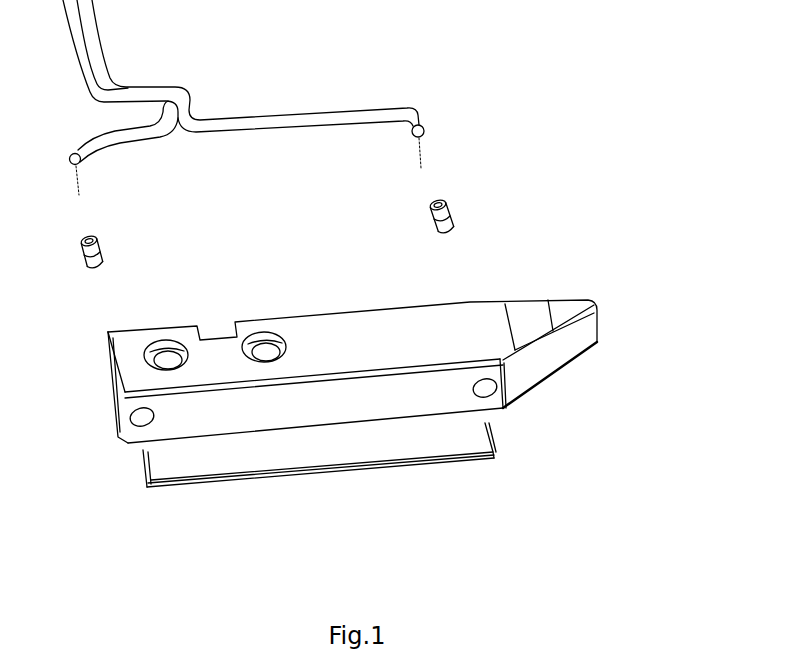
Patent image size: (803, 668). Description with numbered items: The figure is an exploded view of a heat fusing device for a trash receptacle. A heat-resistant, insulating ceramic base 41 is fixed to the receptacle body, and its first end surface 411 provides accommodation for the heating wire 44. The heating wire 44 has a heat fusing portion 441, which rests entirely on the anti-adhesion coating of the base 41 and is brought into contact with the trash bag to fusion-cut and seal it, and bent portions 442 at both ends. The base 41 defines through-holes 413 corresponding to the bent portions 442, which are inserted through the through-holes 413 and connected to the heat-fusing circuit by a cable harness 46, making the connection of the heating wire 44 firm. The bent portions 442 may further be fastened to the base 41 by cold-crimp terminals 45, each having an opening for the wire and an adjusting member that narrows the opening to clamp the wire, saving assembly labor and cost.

The base 41 is at (586, 295).
The first end surface 411 is at (185, 410).
The through-holes 413 is at (138, 414).
The heating wire 44 is at (312, 482).
The heat fusing portion 441 is at (420, 469).
The bent portions 442 is at (495, 442).
The cold-crimp terminals 45 is at (453, 217).
The cable harness 46 is at (420, 123).